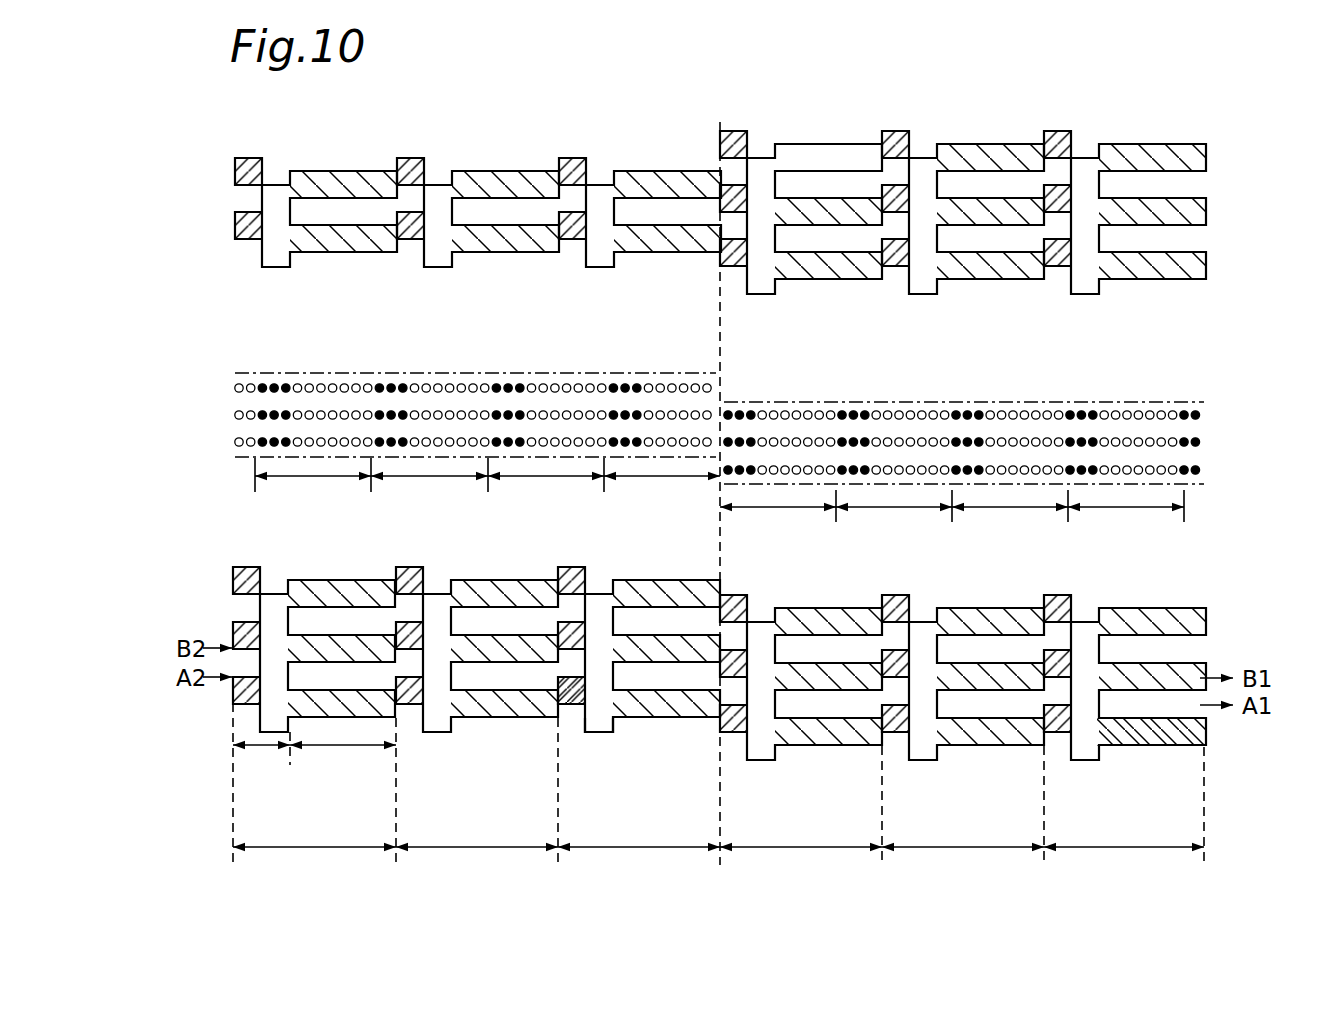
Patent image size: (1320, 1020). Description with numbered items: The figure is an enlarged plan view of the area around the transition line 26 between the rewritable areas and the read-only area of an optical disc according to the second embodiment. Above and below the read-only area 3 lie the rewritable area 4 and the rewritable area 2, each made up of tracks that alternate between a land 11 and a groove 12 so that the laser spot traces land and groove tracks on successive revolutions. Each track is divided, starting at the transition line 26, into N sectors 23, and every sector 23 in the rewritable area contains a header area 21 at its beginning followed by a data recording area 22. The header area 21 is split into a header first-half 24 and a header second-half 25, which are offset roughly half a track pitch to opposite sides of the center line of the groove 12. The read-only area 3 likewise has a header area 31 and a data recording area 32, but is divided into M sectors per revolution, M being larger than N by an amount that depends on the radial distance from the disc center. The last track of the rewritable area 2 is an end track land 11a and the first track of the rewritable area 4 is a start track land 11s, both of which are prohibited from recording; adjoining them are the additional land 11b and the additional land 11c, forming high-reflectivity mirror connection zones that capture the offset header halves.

The rewritable area 2 is at (1215, 598).
The read-only area 3 is at (745, 301).
The rewritable area 4 is at (769, 207).
The land 11 is at (1150, 703).
The end track land 11a is at (1188, 603).
The additional land 11b is at (1215, 487).
The additional land 11c is at (1215, 295).
The start track land 11s is at (1215, 120).
The groove 12 is at (1140, 740).
The header area 21 is at (263, 748).
The data recording area 22 is at (363, 748).
The sector 23 is at (258, 846).
The header first-half 24 is at (572, 706).
The header second-half 25 is at (598, 733).
The transition line 26 is at (720, 836).
The header area 31 is at (268, 383).
The data recording area 32 is at (352, 383).